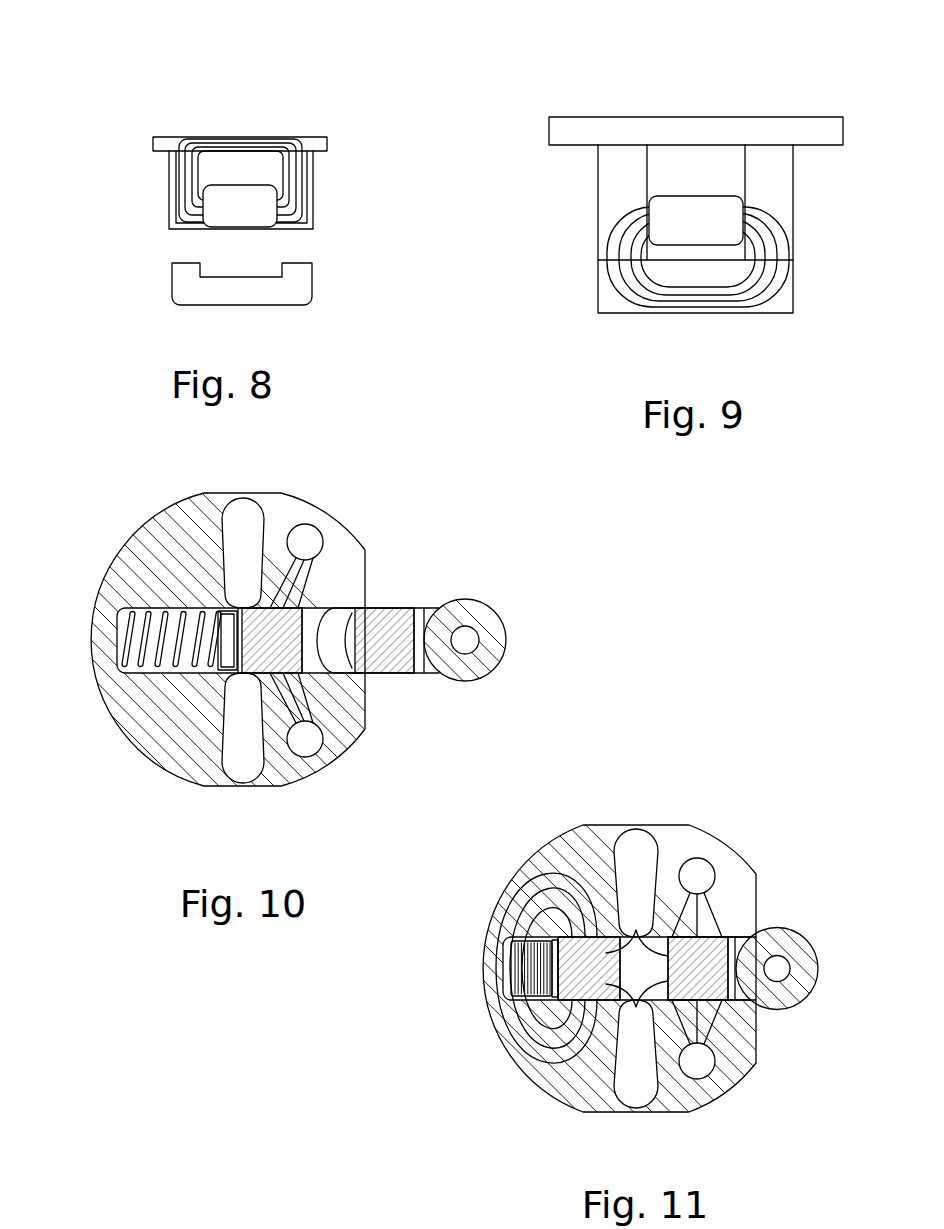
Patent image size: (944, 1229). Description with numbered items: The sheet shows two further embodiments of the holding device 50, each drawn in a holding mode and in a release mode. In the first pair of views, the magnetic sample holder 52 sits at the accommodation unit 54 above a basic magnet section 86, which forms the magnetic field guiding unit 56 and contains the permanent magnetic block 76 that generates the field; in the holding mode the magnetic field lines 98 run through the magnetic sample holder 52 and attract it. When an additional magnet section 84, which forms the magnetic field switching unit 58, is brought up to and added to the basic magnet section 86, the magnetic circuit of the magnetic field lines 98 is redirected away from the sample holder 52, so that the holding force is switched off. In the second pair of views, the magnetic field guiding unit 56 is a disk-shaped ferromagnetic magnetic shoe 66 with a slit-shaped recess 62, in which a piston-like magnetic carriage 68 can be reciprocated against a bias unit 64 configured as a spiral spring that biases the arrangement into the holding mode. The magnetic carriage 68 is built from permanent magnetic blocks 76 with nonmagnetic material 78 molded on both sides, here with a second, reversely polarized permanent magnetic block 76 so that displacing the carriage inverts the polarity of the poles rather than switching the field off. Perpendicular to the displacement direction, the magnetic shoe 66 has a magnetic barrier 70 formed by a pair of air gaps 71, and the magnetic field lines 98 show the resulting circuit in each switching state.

In FIG. 8, the holding device 50 is at (247, 88).
In FIG. 9, the holding device 50 is at (602, 87).
In FIG. 10, the holding device 50 is at (103, 563).
In FIG. 11, the holding device 50 is at (497, 882).
In FIG. 8, the magnetic sample holder 52 is at (263, 146).
In FIG. 9, the magnetic sample holder 52 is at (775, 125).
In FIG. 8, the accommodation unit 54 is at (155, 143).
In FIG. 9, the accommodation unit 54 is at (549, 130).
In FIG. 8, the magnetic field guiding unit 56 is at (172, 207).
In FIG. 9, the magnetic field guiding unit 56 is at (695, 215).
In FIG. 10, the magnetic field guiding unit 56 is at (158, 545).
In FIG. 11, the magnetic field guiding unit 56 is at (552, 863).
In FIG. 8, the magnetic field switching unit 58 is at (186, 290).
In FIG. 9, the magnetic field switching unit 58 is at (780, 303).
In FIG. 10, the magnetic field switching unit 58 is at (404, 587).
In FIG. 11, the magnetic field switching unit 58 is at (780, 915).
In FIG. 10, the recess 62 is at (161, 666).
In FIG. 11, the recess 62 is at (517, 1011).
In FIG. 10, the bias unit 64 is at (132, 637).
In FIG. 11, the bias unit 64 is at (528, 963).
In FIG. 10, the magnetic shoe 66 is at (329, 538).
In FIG. 11, the magnetic shoe 66 is at (739, 881).
In FIG. 10, the magnetic carriage 68 is at (317, 652).
In FIG. 11, the magnetic carriage 68 is at (647, 993).
In FIG. 10, the magnetic barrier 70 is at (234, 492).
In FIG. 11, the magnetic barrier 70 is at (634, 824).
In FIG. 10, the air gaps 71 is at (248, 521).
In FIG. 11, the air gaps 71 is at (641, 851).
In FIG. 8, the permanent magnetic block 76 is at (247, 216).
In FIG. 10, the permanent magnetic block 76 is at (302, 607).
In FIG. 11, the permanent magnetic block 76 is at (636, 925).
In FIG. 10, the nonmagnetic material 78 is at (425, 674).
In FIG. 11, the nonmagnetic material 78 is at (648, 987).
In FIG. 8, the additional magnet section 84 is at (263, 292).
In FIG. 8, the basic magnet section 86 is at (285, 162).
In FIG. 8, the magnetic field lines 98 is at (307, 168).
In FIG. 9, the magnetic field lines 98 is at (668, 287).
In FIG. 10, the magnetic field lines 98 is at (302, 721).
In FIG. 11, the magnetic field lines 98 is at (560, 873).